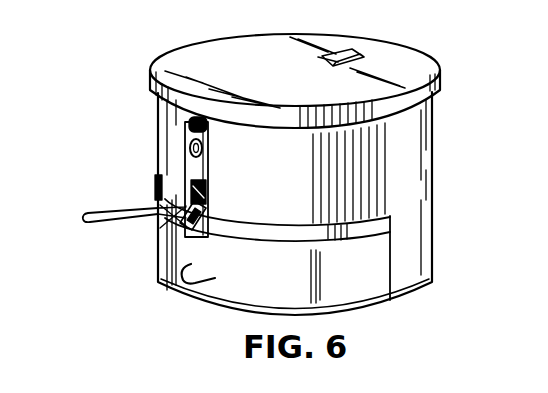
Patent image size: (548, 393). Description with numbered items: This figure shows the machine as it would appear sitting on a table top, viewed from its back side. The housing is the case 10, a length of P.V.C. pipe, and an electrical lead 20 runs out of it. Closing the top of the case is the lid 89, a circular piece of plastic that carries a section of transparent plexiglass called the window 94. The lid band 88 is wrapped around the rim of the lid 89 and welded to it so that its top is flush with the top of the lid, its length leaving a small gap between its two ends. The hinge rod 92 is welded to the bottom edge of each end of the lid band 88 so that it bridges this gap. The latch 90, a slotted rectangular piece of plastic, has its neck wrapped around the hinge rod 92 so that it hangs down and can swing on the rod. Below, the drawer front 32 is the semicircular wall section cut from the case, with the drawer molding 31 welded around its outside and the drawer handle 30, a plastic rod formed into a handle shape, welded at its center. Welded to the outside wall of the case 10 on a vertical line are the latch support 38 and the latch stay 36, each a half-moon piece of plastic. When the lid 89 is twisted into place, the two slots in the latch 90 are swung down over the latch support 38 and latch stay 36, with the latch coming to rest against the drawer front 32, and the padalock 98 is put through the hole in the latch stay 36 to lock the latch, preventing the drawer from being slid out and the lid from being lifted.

The case 10 is at (433, 162).
The electrical lead 20 is at (100, 211).
The drawer handle 30 is at (166, 288).
The drawer molding 31 is at (373, 229).
The drawer front 32 is at (372, 265).
The latch stay 36 is at (208, 191).
The latch support 38 is at (188, 142).
The lid band 88 is at (430, 93).
The lid 89 is at (180, 62).
The latch 90 is at (192, 168).
The hinge rod 92 is at (202, 124).
The window 94 is at (353, 60).
The padalock 98 is at (160, 223).